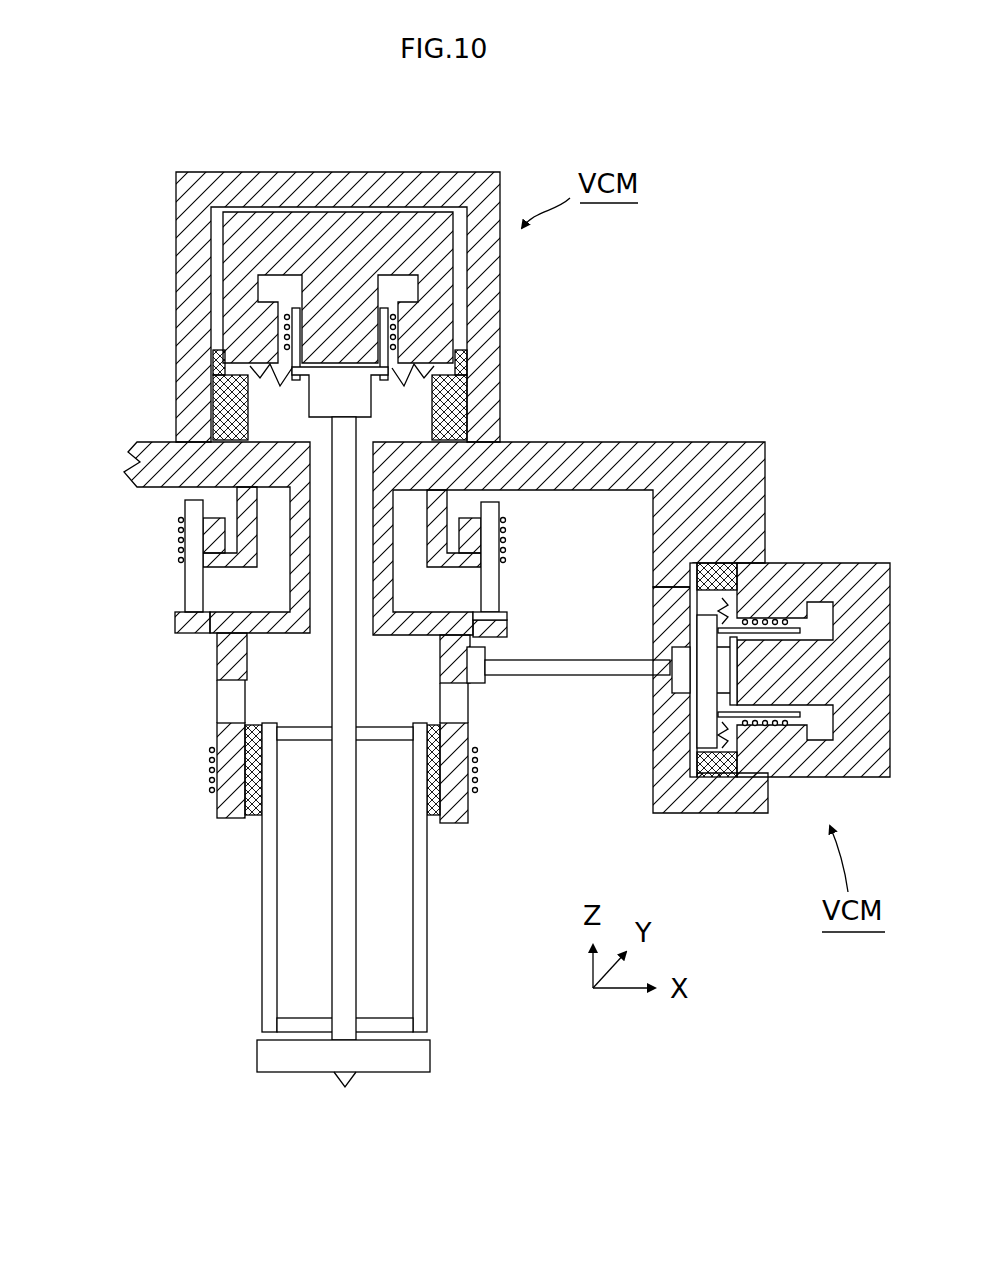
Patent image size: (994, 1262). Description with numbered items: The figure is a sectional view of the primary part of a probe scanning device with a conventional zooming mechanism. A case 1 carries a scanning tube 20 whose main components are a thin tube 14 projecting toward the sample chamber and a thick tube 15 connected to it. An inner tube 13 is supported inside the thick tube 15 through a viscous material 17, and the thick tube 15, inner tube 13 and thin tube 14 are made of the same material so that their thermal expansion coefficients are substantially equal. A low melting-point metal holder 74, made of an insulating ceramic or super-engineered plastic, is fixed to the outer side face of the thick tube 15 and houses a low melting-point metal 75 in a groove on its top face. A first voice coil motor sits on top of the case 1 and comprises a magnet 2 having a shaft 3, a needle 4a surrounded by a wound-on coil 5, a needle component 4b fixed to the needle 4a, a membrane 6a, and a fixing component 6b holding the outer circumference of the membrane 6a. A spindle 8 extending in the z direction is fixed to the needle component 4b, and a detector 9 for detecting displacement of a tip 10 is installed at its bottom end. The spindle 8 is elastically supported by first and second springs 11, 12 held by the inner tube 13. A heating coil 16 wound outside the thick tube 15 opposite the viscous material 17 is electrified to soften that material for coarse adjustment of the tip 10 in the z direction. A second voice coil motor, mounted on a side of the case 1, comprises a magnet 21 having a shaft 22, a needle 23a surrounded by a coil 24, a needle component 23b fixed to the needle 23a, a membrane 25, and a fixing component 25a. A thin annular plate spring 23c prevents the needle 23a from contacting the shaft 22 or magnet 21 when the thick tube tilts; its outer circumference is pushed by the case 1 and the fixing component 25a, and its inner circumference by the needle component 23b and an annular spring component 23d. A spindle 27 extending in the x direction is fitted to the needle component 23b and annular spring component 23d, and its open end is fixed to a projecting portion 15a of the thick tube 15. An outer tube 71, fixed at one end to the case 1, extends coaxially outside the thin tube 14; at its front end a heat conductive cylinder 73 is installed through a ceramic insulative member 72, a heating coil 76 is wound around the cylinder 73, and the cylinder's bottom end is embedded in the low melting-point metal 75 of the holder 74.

The case 1 is at (620, 452).
The magnet 2 is at (432, 330).
The shaft 3 is at (352, 302).
The needle 4a is at (270, 280).
The needle component 4b is at (320, 402).
The coil 5 is at (290, 324).
The membrane 6a is at (262, 372).
The fixing component 6b is at (470, 380).
The spindle 8 is at (355, 885).
The detector 9 is at (432, 1055).
The tip 10 is at (348, 1080).
The first spring 11 is at (303, 730).
The second spring 12 is at (290, 1020).
The inner tube 13 is at (268, 928).
The thin tube 14 is at (213, 557).
The thick tube 15 is at (225, 655).
The projecting portion 15a is at (472, 670).
The heating coil 16 is at (210, 757).
The viscous material 17 is at (255, 815).
The scanning tube 20 is at (178, 797).
The magnet 21 is at (778, 752).
The shaft 22 is at (840, 755).
The needle 23a is at (805, 640).
The needle component 23b is at (707, 722).
The thin annular plate spring 23c is at (697, 743).
The annular spring component 23d is at (672, 688).
The coil 24 is at (772, 620).
The membrane 25 is at (692, 752).
The fixing component 25a is at (713, 777).
The spindle 27 is at (618, 668).
The outer tube 71 is at (247, 505).
The insulative member 72 is at (293, 583).
The heat conductive cylinder 73 is at (492, 583).
The low melting-point metal holder 74 is at (508, 628).
The low melting-point metal 75 is at (505, 612).
The heating coil 76 is at (505, 532).